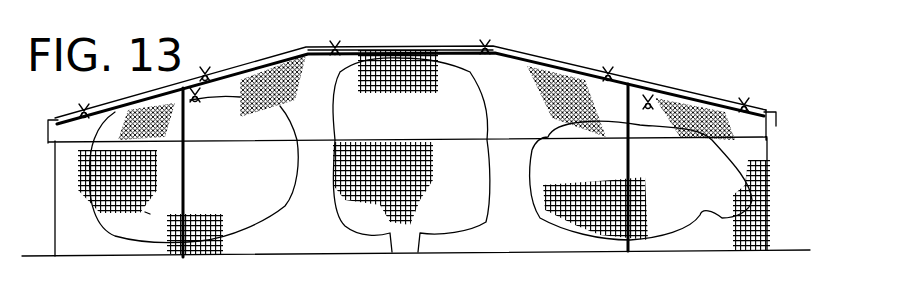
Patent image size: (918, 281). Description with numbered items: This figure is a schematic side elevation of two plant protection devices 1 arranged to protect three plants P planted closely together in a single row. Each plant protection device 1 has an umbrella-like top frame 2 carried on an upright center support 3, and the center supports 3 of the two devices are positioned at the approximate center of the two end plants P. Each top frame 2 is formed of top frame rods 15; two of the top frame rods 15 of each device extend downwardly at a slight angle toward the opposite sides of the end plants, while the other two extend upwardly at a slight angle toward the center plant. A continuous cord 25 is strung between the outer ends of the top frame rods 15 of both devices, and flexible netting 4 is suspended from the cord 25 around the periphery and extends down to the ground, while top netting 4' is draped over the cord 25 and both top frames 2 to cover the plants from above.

The plant protection device 1 is at (150, 212).
The top frame 2 is at (112, 97).
The center support 3 is at (193, 174).
The flexible netting 4 is at (410, 128).
The top netting 4' is at (398, 46).
The top frame rods 15 is at (80, 110).
The cord 25 is at (355, 50).
The plants P is at (262, 230).